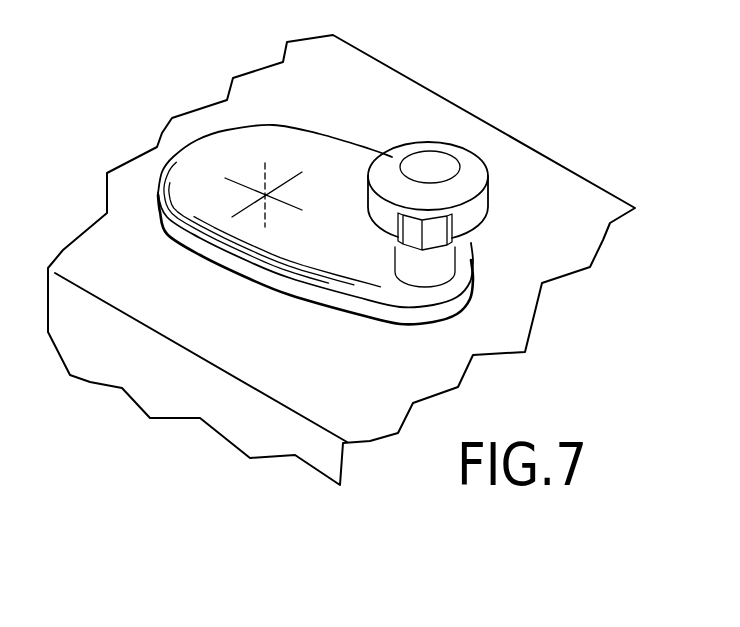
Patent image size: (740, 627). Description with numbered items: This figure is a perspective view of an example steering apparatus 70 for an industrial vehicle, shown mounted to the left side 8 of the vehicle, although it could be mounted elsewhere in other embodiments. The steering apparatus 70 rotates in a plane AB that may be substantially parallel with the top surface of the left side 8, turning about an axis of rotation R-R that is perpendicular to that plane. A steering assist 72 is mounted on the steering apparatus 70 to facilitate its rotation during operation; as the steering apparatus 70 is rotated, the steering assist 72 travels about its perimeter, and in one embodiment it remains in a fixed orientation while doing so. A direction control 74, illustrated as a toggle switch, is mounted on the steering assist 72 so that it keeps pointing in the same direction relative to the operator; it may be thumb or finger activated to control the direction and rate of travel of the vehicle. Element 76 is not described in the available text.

The left side 8 is at (393, 93).
The steering apparatus 70 is at (267, 112).
The steering assist 72 is at (467, 148).
The direction control 74 is at (453, 243).
The elongated bearing pad 76 is at (347, 318).